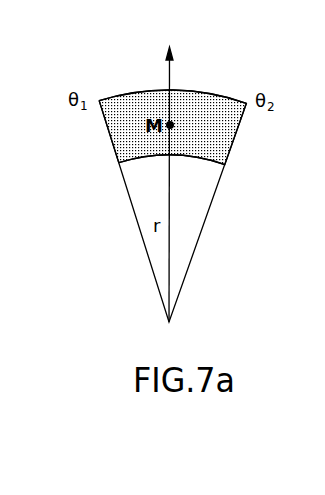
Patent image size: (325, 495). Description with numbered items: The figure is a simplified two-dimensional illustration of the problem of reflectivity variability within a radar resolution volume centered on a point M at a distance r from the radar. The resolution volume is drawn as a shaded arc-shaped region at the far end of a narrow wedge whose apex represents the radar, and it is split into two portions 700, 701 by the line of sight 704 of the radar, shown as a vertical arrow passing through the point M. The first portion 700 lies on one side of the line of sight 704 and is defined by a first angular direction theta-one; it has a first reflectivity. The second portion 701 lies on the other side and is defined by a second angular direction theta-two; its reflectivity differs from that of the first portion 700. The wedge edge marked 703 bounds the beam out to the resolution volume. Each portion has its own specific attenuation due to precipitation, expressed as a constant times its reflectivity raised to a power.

The first portion 700 is at (127, 137).
The second portion 701 is at (222, 132).
The sector boundary line 703 is at (192, 217).
The line of sight 704 is at (173, 70).